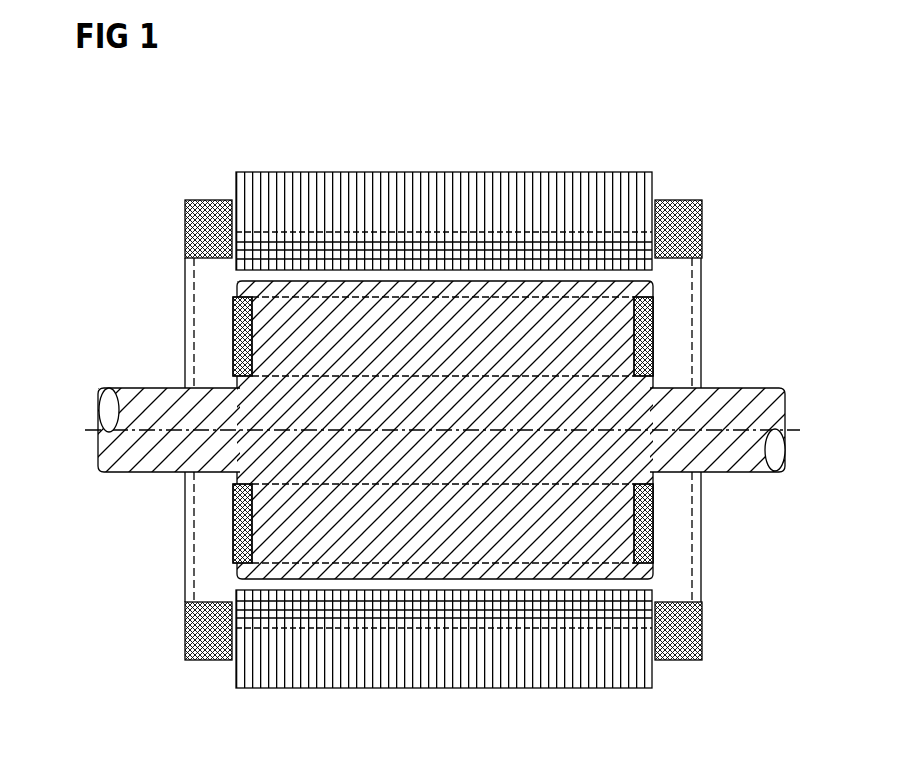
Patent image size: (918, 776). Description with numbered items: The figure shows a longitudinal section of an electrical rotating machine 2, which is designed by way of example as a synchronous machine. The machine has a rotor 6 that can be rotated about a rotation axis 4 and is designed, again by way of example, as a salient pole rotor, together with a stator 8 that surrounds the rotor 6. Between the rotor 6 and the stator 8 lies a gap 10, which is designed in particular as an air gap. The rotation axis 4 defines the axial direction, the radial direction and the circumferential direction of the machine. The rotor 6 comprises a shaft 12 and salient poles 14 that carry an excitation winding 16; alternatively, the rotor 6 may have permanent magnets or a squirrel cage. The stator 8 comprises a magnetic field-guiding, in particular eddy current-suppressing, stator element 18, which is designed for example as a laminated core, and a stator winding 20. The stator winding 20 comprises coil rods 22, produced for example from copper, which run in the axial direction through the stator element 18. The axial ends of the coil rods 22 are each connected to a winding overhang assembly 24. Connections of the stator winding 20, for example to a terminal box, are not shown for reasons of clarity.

The electrical rotating machine 2 is at (565, 103).
The rotation axis 4 is at (90, 428).
The rotor 6 is at (437, 419).
The stator 8 is at (458, 426).
The gap 10 is at (230, 277).
The shaft 12 is at (145, 456).
The salient poles 14 is at (232, 348).
The excitation winding 16 is at (228, 313).
The stator element 18 is at (315, 183).
The stator winding 20 is at (375, 237).
The coil rods 22 is at (370, 604).
The winding overhang assembly 24 is at (202, 190).